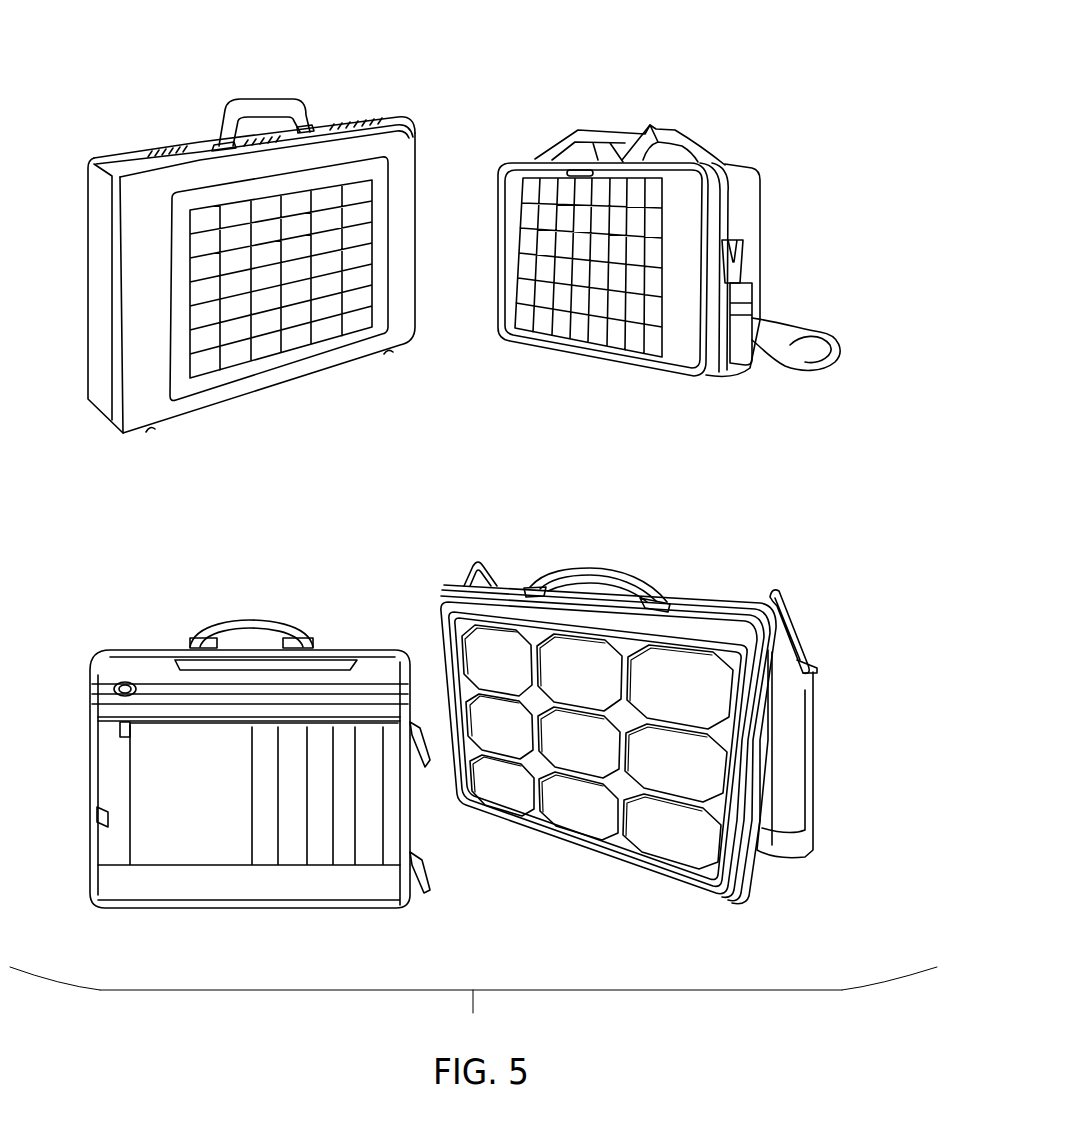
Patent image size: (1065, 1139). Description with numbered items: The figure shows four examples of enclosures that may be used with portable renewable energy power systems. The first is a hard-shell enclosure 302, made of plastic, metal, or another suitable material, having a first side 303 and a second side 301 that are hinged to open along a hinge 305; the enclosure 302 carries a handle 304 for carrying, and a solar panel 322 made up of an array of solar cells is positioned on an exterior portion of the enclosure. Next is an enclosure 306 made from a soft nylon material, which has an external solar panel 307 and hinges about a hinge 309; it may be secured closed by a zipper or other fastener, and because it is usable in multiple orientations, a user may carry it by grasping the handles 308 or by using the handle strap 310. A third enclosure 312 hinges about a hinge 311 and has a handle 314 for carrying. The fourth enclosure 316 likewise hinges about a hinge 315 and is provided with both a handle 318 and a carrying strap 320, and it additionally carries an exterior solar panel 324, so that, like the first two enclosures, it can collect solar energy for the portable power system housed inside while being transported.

The second side 301 is at (187, 410).
The enclosure 302 is at (148, 102).
The first side 303 is at (93, 180).
The handle 304 is at (279, 98).
The hinge 305 is at (98, 407).
The enclosure 306 is at (728, 88).
The external solar panel 307 is at (528, 218).
The handles 308 is at (600, 131).
The hinge 309 is at (712, 370).
The handle strap 310 is at (823, 335).
The hinge 311 is at (92, 893).
The enclosure 312 is at (127, 642).
The handle 314 is at (260, 625).
The hinge 315 is at (750, 865).
The enclosure 316 is at (516, 547).
The handle 318 is at (601, 574).
The carrying strap 320 is at (810, 708).
The solar panel 322 is at (203, 313).
The exterior solar panel 324 is at (585, 805).